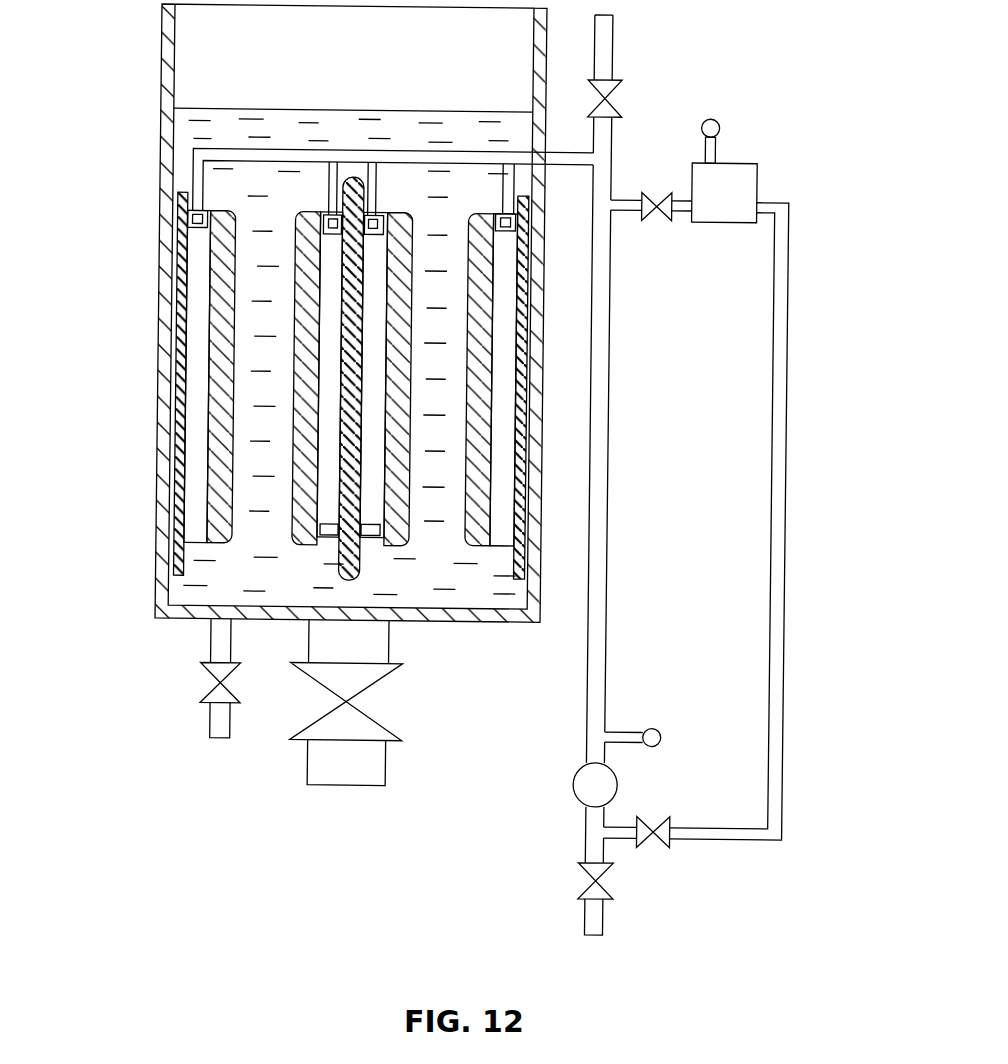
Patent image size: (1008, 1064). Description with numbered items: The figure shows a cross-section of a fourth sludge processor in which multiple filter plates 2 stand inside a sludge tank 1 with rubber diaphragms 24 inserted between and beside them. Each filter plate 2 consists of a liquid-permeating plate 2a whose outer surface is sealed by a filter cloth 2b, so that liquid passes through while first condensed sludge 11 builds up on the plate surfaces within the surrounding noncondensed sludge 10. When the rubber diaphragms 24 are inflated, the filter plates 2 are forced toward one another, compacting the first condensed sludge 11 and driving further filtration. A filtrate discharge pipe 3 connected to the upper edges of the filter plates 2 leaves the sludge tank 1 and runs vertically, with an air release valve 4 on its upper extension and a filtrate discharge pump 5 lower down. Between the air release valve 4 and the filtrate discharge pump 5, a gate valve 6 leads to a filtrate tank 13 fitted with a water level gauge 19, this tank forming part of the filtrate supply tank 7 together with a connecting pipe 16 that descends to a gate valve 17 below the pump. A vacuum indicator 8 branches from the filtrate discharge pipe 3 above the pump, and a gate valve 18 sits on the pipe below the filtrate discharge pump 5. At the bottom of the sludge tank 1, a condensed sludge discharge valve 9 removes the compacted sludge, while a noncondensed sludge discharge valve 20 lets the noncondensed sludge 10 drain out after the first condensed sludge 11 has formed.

The sludge tank 1 is at (164, 536).
The filter plate 2 is at (274, 378).
The liquid-permeating plate 2a is at (197, 402).
The filter cloth 2b is at (217, 346).
The filtrate discharge pipe 3 is at (619, 472).
The air release valve 4 is at (619, 92).
The filtrate discharge pump 5 is at (589, 779).
The gate valve 6 is at (651, 207).
The filtrate supply tank 7 is at (783, 468).
The vacuum indicator 8 is at (672, 730).
The condensed sludge discharge valve 9 is at (376, 717).
The noncondensed sludge 10 is at (184, 125).
The first condensed sludge 11 is at (82, 292).
The filtrate tank 13 is at (778, 159).
The connecting pipe 16 is at (767, 521).
The gate valve 17 is at (654, 840).
The gate valve 18 is at (595, 882).
The water level gauge 19 is at (723, 121).
The noncondensed sludge discharge valve 20 is at (218, 691).
The rubber diaphragm 24 is at (358, 184).